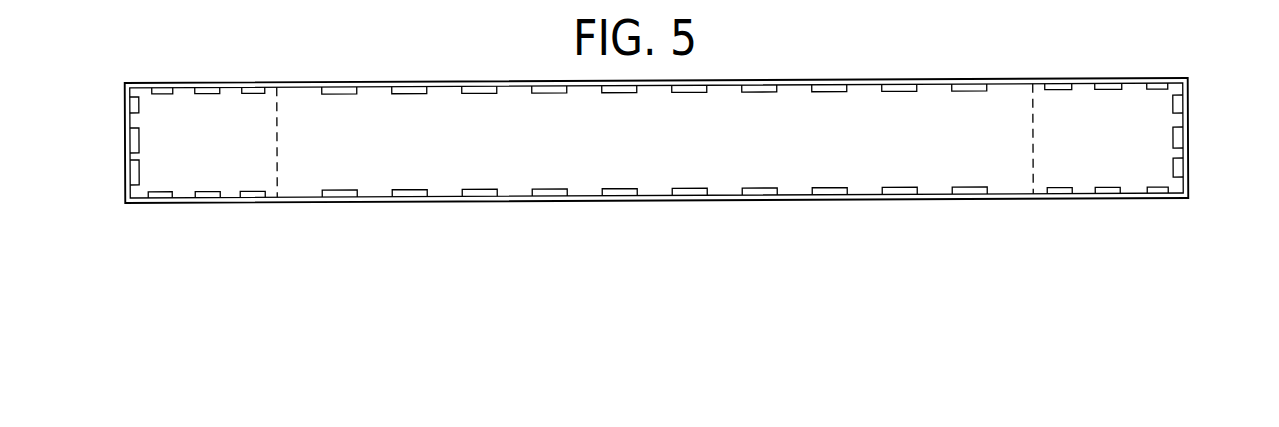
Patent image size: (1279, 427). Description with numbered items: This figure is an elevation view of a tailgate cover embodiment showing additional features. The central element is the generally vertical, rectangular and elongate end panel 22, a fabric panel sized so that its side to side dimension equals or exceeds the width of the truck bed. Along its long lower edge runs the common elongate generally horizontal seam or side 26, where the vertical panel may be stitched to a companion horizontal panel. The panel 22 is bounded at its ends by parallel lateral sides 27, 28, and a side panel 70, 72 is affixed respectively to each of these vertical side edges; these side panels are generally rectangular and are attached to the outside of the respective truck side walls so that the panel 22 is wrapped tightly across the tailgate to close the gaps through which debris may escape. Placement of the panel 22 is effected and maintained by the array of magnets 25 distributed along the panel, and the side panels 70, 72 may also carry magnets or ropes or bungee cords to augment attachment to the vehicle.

The vertical end panel 22 is at (712, 151).
The array of magnets 25 is at (211, 88).
The common elongate horizontal seam or side 26 is at (447, 203).
The lateral side 27 is at (282, 150).
The lateral side 28 is at (1035, 144).
The side panel 70 is at (1082, 188).
The side panel 72 is at (202, 183).